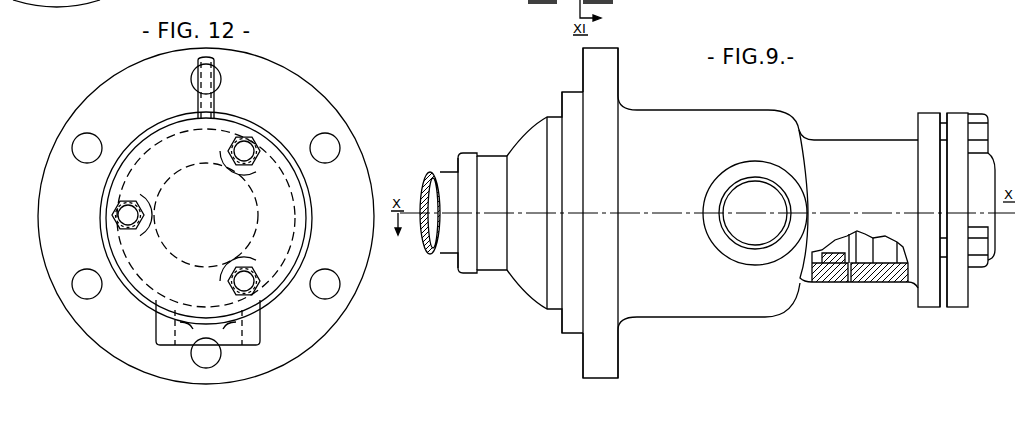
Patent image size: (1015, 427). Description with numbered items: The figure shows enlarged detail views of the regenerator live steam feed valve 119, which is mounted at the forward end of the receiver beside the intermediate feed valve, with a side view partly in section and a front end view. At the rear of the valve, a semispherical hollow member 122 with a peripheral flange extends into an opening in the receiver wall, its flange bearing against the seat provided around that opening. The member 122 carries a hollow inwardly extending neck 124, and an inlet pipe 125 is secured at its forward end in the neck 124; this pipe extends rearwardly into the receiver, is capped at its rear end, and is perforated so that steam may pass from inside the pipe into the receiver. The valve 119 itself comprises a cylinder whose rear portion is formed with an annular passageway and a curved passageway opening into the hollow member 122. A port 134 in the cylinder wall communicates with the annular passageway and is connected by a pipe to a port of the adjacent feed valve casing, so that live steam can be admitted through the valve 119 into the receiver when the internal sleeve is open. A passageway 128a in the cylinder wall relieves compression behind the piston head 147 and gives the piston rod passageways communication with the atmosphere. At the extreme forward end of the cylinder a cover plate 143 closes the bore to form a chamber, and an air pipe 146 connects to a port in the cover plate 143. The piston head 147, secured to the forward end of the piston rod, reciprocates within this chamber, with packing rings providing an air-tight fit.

In FIG. 12, the regenerator live steam feed valve 119 is at (145, 306).
In FIG. 9, the regenerator live steam feed valve 119 is at (773, 125).
In FIG. 9, the semispherical hollow member 122 is at (528, 138).
In FIG. 9, the neck 124 is at (497, 264).
In FIG. 9, the inlet pipe 125 is at (443, 177).
In FIG. 9, the port 134 is at (740, 192).
In FIG. 9, the passageway 128a is at (851, 264).
In FIG. 9, the piston head 147 is at (884, 268).
In FIG. 12, the cover plate 143 is at (170, 128).
In FIG. 12, the air pipe 146 is at (215, 101).